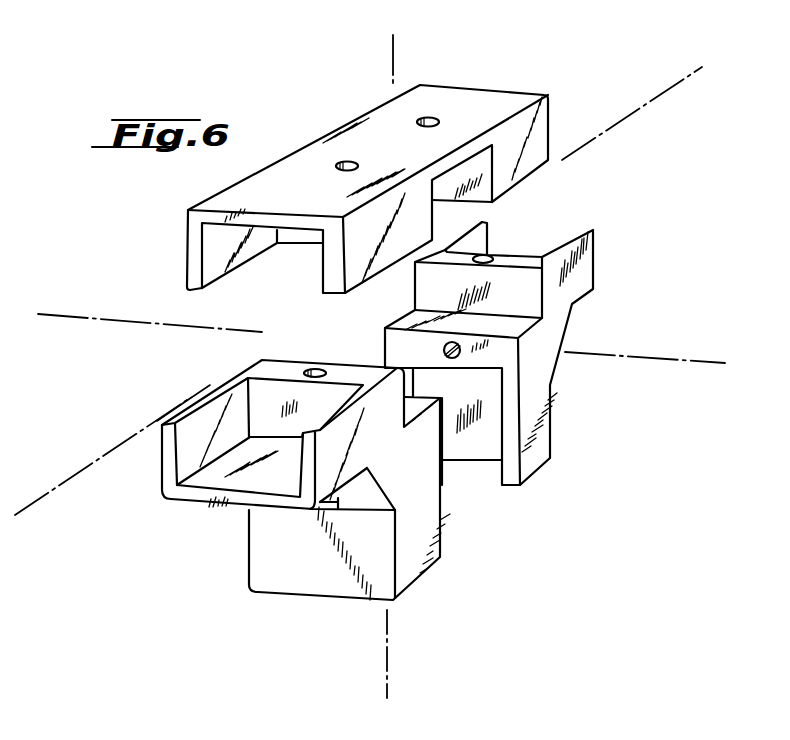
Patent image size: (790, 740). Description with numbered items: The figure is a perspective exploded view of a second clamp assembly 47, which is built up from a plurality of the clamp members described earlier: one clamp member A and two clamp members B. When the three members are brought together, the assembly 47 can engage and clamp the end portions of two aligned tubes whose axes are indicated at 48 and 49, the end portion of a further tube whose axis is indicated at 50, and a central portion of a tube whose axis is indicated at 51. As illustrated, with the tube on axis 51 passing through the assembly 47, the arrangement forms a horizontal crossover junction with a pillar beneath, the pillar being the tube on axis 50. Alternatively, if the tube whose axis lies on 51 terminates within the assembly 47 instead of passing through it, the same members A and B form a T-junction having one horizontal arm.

The clamp member A is at (302, 142).
The clamp member B is at (302, 598).
The second clamp assembly 47 is at (567, 512).
The tube axis 48 is at (68, 478).
The tube axis 49 is at (680, 78).
The tube axis 50 is at (387, 677).
The tube axis 51 is at (60, 315).